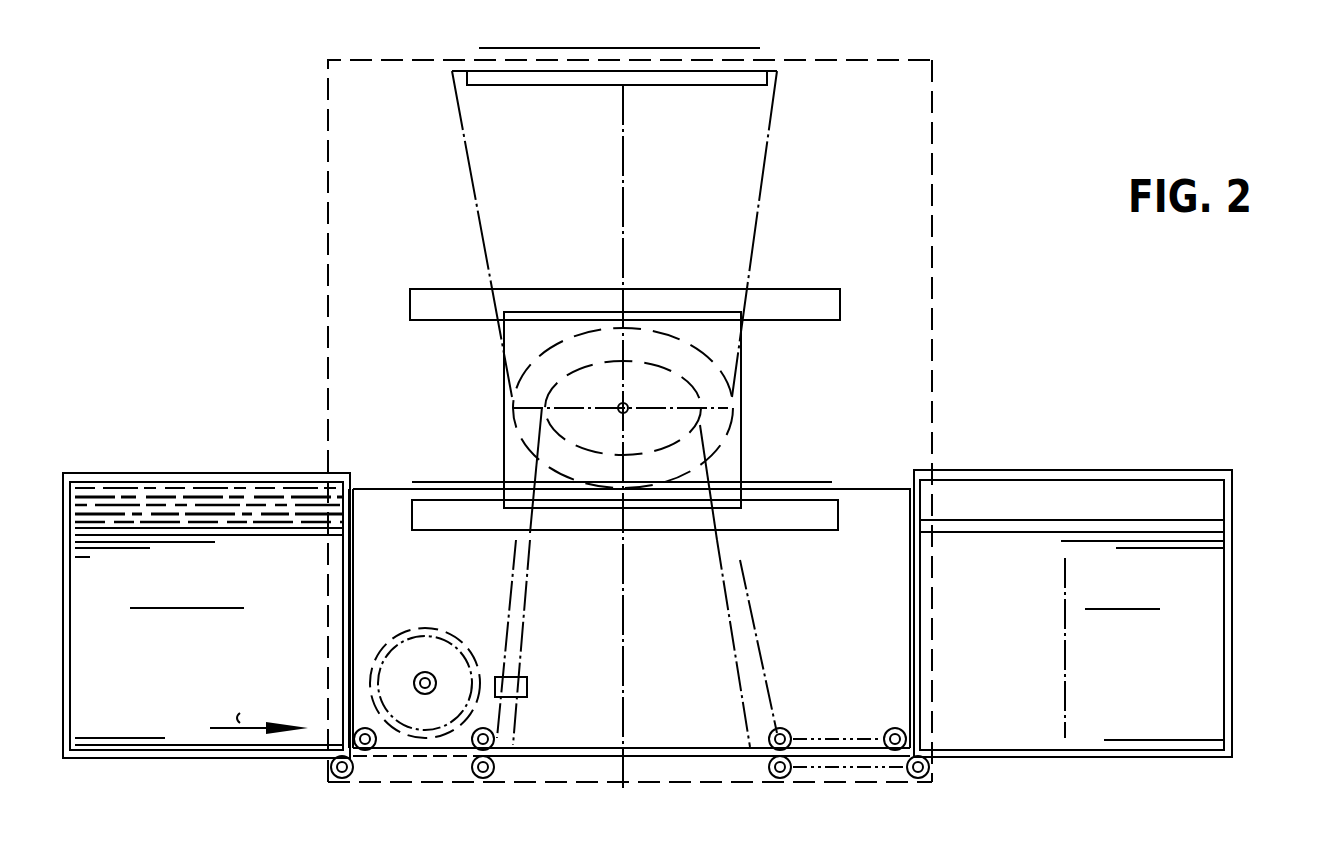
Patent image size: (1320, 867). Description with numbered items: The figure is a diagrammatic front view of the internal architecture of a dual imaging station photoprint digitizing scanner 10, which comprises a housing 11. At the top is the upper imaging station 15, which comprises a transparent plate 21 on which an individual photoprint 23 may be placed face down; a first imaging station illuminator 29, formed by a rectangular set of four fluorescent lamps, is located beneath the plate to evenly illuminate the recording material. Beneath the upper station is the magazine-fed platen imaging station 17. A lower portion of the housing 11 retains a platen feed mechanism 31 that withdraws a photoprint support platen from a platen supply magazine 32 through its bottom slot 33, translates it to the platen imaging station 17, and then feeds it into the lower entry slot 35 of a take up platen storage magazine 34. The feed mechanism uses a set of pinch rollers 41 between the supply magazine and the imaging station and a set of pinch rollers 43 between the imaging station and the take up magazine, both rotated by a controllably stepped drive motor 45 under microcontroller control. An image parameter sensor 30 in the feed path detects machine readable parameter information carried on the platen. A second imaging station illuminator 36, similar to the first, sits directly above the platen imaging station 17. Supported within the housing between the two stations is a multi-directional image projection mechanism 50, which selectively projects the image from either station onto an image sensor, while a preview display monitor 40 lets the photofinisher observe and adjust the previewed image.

The scanner 10 is at (935, 242).
The housing 11 is at (934, 306).
The upper imaging station 15 is at (548, 86).
The platen imaging station 17 is at (679, 768).
The transparent plate 21 is at (455, 72).
The photoprint 23 is at (524, 48).
The first imaging station illuminator 29 is at (790, 289).
The image parameter sensor 30 is at (530, 684).
The platen feed mechanism 31 is at (624, 797).
The platen supply magazine 32 is at (97, 474).
The bottom slot 33 is at (356, 727).
The take up platen storage magazine 34 is at (1232, 572).
The lower entry slot 35 is at (905, 736).
The second imaging station illuminator 36 is at (808, 520).
The preview display monitor 40 is at (547, 748).
The pinch rollers 41 is at (334, 782).
The pinch rollers 43 is at (822, 745).
The stepped drive motor 45 is at (452, 632).
The image projection mechanism 50 is at (744, 405).